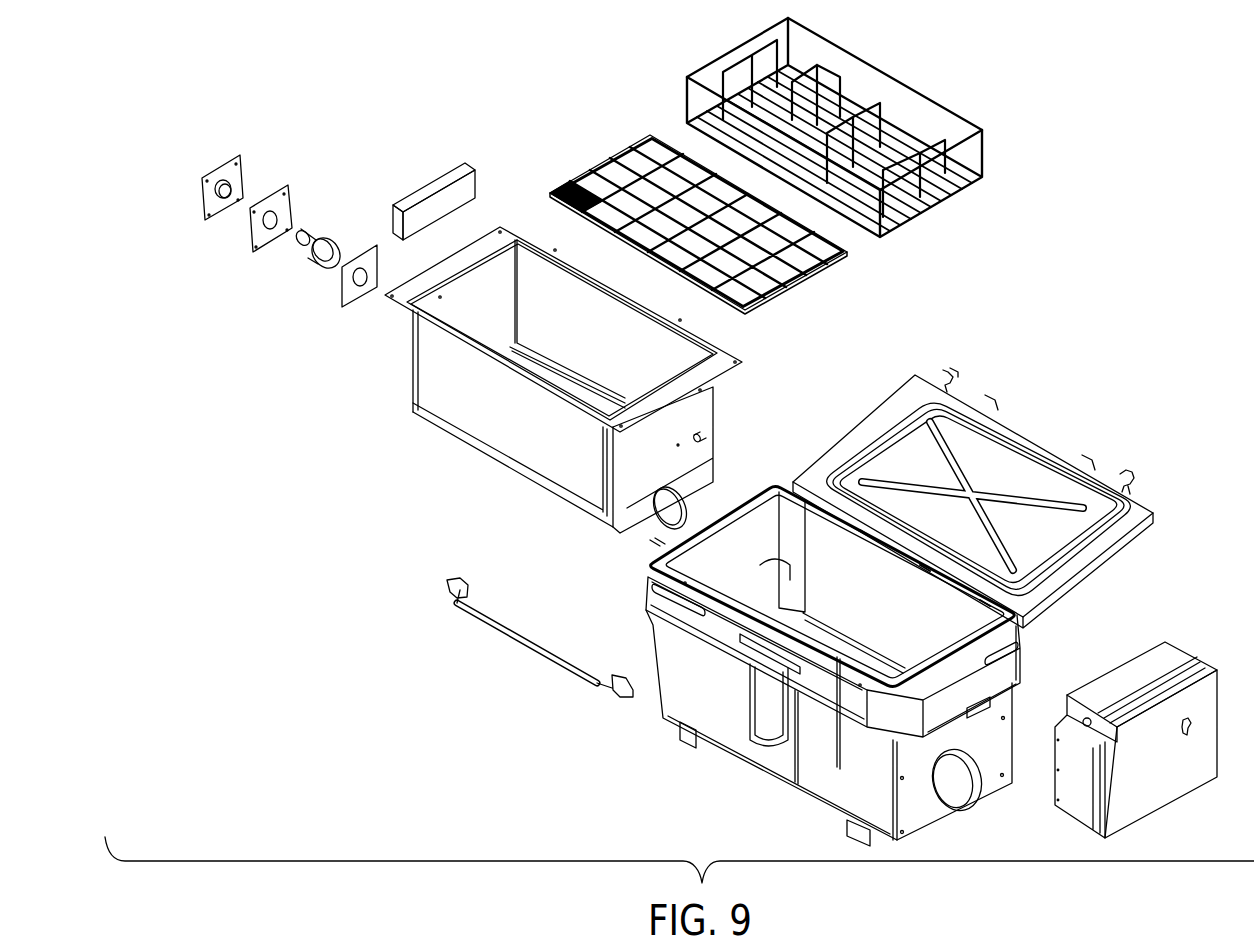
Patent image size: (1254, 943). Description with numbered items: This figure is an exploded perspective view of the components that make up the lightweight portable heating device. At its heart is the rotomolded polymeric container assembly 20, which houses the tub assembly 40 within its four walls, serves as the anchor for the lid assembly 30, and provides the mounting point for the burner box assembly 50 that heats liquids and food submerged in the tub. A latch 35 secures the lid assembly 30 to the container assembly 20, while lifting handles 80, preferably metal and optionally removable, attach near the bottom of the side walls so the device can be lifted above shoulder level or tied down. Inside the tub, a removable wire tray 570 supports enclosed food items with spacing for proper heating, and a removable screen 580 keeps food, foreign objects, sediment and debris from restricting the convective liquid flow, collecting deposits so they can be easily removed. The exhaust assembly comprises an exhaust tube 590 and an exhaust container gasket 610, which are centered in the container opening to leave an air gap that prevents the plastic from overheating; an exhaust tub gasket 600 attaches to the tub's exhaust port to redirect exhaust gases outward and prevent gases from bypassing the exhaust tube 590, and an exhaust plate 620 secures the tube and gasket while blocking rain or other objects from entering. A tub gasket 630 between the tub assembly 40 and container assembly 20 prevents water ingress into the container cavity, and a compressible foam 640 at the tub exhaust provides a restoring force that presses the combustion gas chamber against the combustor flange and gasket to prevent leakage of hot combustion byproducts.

The container assembly 20 is at (817, 813).
The lid assembly 30 is at (1043, 440).
The latch 35 is at (1127, 467).
The tub assembly 40 is at (563, 403).
The burner box assembly 50 is at (1173, 783).
The lifting handles 80 is at (527, 652).
The removable wire tray 570 is at (958, 195).
The removable screen 580 is at (807, 280).
The exhaust tube 590 is at (316, 270).
The exhaust tub gasket 600 is at (342, 309).
The exhaust container gasket 610 is at (250, 254).
The exhaust plate 620 is at (200, 222).
The tub gasket 630 is at (652, 545).
The compressible foam 640 is at (427, 190).